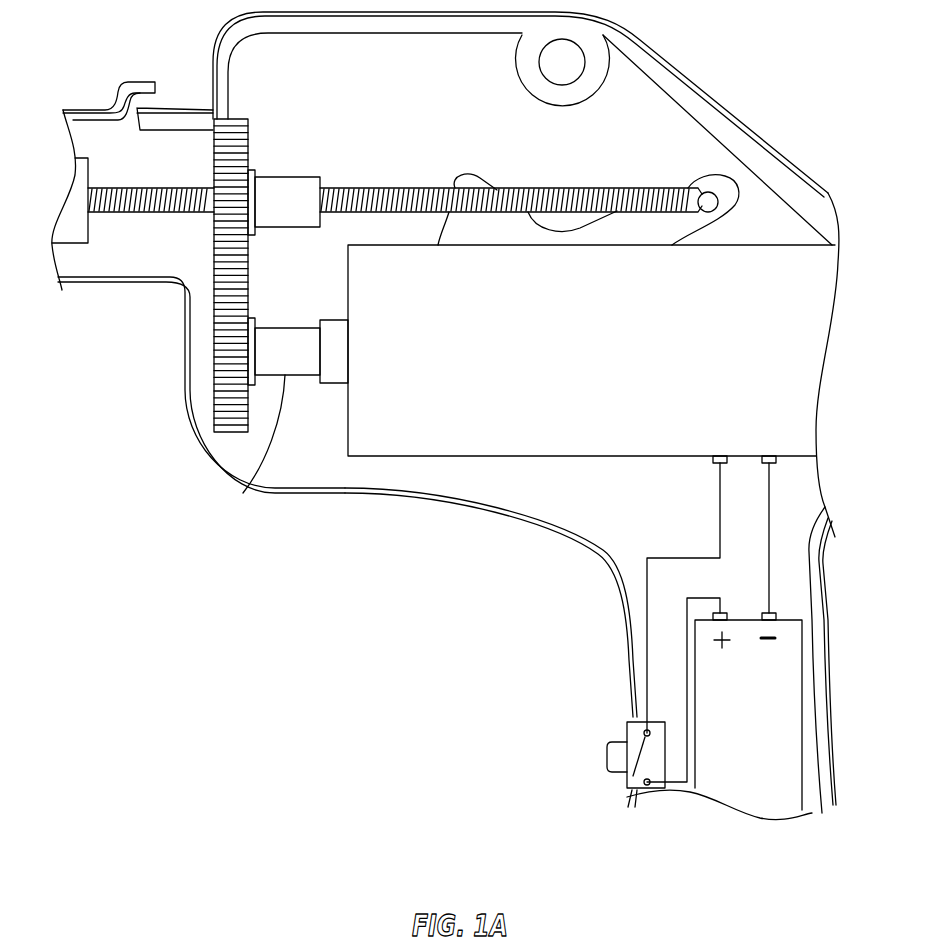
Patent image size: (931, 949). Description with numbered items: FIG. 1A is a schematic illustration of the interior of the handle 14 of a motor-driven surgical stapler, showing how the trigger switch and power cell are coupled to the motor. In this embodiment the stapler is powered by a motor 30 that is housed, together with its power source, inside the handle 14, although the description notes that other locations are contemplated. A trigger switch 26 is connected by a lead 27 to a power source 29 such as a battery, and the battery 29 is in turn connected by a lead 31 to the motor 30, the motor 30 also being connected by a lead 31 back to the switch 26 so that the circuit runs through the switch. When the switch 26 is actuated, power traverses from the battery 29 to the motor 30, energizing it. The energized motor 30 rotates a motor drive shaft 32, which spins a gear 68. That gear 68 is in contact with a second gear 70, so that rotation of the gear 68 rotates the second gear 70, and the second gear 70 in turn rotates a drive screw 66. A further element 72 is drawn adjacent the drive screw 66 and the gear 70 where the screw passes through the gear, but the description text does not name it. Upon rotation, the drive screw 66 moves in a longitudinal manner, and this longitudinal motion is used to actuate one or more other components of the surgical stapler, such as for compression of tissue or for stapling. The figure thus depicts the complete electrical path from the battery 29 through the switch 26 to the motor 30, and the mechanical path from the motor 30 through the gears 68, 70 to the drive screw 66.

The handle 14 is at (617, 605).
The trigger switch 26 is at (603, 757).
The lead 27 is at (687, 654).
The battery 29 is at (734, 737).
The motor 30 is at (453, 456).
The lead 31 is at (768, 483).
The motor drive shaft 32 is at (253, 478).
The drive screw 66 is at (537, 187).
The gear 68 is at (213, 377).
The second gear 70 is at (213, 253).
The hub 72 is at (283, 177).